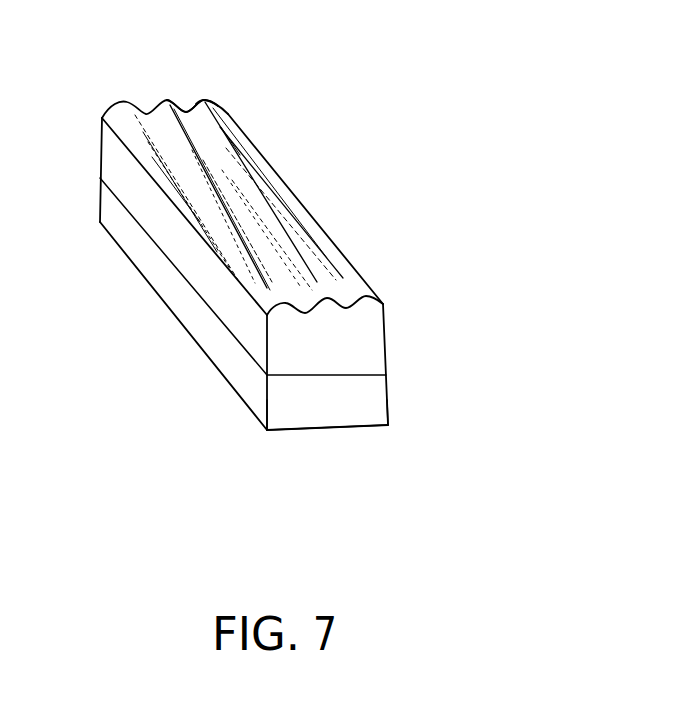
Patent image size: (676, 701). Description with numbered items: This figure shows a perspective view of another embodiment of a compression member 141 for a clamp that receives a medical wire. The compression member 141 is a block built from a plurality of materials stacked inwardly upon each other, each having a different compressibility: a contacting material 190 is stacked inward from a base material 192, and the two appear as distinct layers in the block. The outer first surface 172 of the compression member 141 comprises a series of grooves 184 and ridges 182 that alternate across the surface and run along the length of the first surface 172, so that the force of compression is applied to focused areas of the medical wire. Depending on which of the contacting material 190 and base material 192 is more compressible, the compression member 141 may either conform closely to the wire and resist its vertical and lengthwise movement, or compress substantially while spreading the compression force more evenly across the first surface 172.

The first compression member 141 is at (266, 139).
The first surface 172 is at (301, 226).
The ridge 182 is at (186, 112).
The groove 184 is at (206, 100).
The contacting material 190 is at (363, 343).
The base material 192 is at (365, 402).